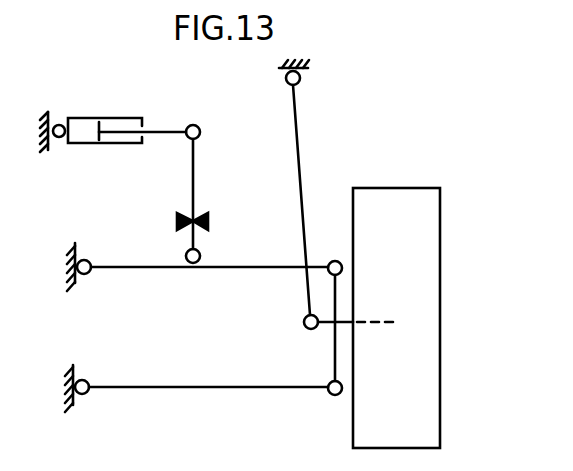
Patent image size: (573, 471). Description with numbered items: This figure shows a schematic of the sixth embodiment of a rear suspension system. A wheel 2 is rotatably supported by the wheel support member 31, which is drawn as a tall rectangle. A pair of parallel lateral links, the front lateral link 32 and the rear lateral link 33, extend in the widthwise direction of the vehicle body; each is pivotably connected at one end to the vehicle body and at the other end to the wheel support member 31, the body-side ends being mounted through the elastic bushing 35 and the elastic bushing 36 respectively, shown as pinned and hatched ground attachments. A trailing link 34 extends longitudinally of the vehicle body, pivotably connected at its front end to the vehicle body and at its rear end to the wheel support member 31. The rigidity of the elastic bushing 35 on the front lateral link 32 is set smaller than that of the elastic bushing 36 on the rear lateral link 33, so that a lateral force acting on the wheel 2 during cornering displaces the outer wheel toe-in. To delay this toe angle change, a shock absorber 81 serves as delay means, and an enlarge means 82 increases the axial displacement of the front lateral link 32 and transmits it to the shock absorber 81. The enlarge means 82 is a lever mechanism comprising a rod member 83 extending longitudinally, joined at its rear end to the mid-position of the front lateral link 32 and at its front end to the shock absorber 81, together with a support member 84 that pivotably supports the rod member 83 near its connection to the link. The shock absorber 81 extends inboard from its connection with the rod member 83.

The wheel 2 is at (441, 227).
The wheel support member 31 is at (335, 340).
The front lateral link 32 is at (232, 270).
The rear lateral link 33 is at (210, 389).
The trailing link 34 is at (298, 138).
The elastic bushing 35 is at (90, 273).
The elastic bushing 36 is at (87, 394).
The shock absorber 81 is at (107, 117).
The enlarge means 82 is at (226, 203).
The rod member 83 is at (193, 176).
The support member 84 is at (177, 222).